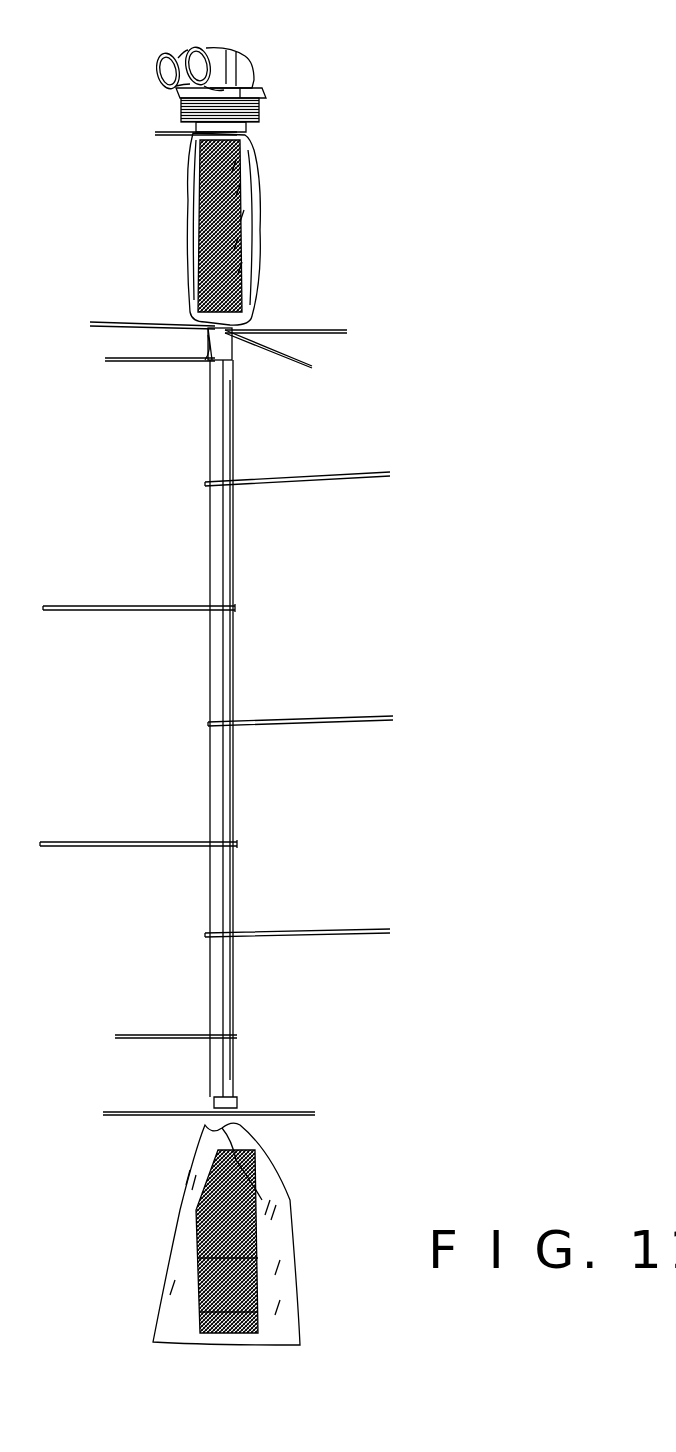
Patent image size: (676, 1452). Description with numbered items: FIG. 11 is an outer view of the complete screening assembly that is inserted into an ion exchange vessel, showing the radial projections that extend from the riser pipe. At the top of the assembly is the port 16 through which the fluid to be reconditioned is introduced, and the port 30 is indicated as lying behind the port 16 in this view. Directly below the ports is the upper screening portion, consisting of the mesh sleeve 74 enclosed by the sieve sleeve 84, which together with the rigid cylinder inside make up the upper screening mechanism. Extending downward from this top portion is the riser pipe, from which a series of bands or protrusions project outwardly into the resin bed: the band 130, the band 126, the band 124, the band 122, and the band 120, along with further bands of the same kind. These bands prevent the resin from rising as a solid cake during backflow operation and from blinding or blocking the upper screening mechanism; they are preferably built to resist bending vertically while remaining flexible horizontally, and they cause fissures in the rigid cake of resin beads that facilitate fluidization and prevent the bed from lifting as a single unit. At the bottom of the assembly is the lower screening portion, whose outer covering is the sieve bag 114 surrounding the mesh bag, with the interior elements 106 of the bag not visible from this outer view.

The port 16 is at (172, 66).
The port 30 is at (196, 58).
The mesh sleeve 74 is at (245, 216).
The sieve sleeve 84 is at (262, 248).
The band 130 is at (288, 478).
The band 126 is at (285, 722).
The band 124 is at (103, 842).
The band 122 is at (275, 933).
The band 120 is at (268, 1110).
The sieve bag 114 is at (290, 1200).
The lower filter element 106 is at (186, 1282).